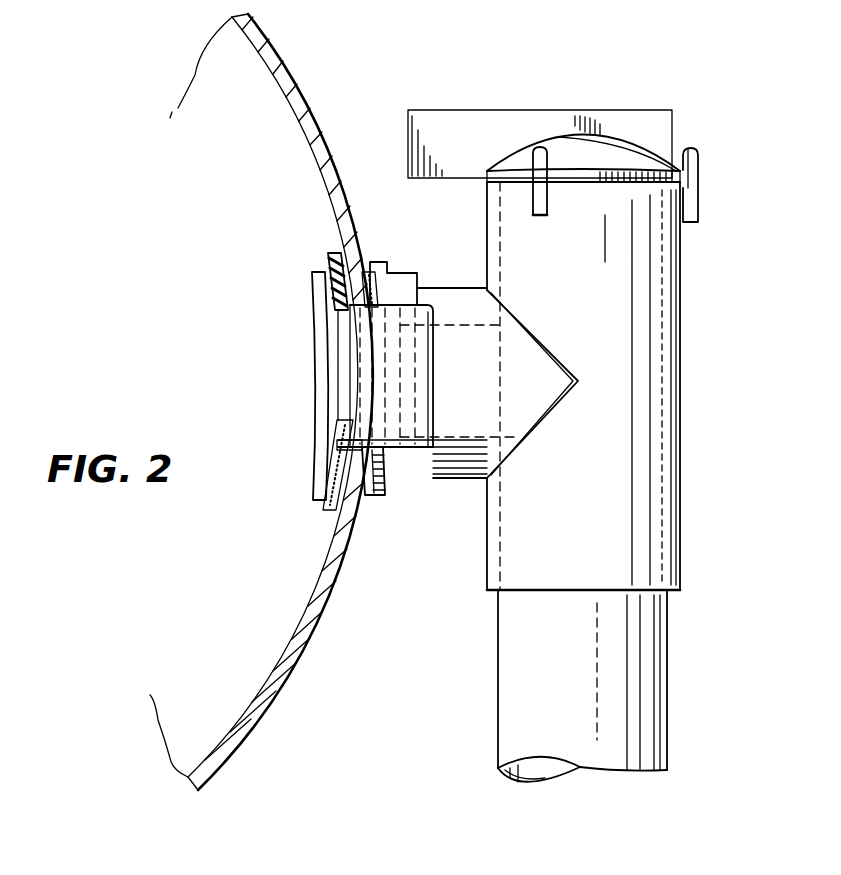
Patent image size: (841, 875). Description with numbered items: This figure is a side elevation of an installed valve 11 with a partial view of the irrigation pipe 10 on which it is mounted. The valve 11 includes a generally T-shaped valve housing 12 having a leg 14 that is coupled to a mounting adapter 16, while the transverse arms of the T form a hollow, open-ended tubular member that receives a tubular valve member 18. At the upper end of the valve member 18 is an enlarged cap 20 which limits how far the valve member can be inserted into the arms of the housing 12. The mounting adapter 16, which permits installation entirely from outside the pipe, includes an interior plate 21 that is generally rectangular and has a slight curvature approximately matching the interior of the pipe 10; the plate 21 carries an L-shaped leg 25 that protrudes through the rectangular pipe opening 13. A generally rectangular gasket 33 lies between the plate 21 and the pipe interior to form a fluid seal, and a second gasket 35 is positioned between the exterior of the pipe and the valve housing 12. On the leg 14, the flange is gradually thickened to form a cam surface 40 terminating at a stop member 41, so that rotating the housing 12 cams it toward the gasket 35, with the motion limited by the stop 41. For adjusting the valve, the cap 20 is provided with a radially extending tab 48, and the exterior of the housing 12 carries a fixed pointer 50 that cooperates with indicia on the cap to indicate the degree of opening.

The irrigation pipe 10 is at (279, 62).
The valve 11 is at (708, 209).
The valve housing 12 is at (684, 298).
The rectangular pipe opening 13 is at (345, 443).
The leg 14 is at (428, 480).
The mounting adapter 16 is at (358, 366).
The tubular valve member 18 is at (668, 630).
The cap 20 is at (512, 148).
The interior plate 21 is at (312, 468).
The leg 25 is at (407, 460).
The gasket 33 is at (337, 254).
The second gasket 35 is at (371, 270).
The cam surface 40 is at (402, 374).
The stop member 41 is at (418, 276).
The tab 48 is at (424, 110).
The fixed pointer 50 is at (690, 150).